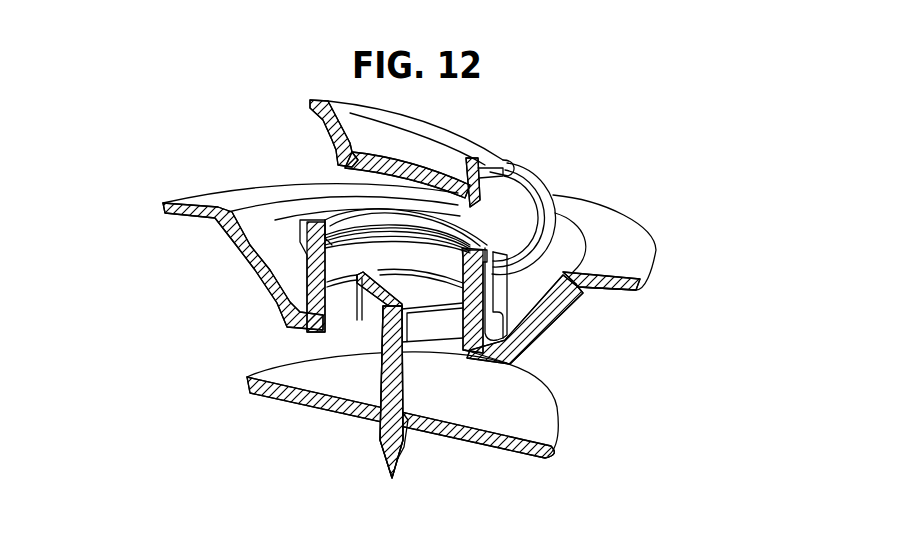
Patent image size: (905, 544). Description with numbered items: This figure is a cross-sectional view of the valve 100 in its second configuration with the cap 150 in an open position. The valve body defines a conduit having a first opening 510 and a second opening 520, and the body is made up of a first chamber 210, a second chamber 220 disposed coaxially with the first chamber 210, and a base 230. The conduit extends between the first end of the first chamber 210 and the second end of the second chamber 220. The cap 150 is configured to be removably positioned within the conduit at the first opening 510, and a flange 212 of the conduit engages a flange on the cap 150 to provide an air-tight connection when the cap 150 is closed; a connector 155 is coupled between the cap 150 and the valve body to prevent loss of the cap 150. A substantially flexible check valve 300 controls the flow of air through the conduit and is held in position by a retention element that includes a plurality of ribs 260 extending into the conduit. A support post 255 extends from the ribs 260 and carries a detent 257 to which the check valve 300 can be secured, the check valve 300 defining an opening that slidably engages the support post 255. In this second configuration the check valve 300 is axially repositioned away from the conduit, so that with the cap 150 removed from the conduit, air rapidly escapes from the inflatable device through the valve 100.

The valve 100 is at (150, 172).
The cap 150 is at (480, 150).
The connector 155 is at (547, 187).
The first chamber 210 is at (313, 275).
The flange 212 is at (337, 232).
The second chamber 220 is at (545, 305).
The base 230 is at (628, 247).
The support post 255 is at (382, 447).
The detent 257 is at (399, 415).
The ribs 260 is at (373, 317).
The check valve 300 is at (542, 418).
The first opening 510 is at (348, 228).
The second opening 520 is at (343, 315).